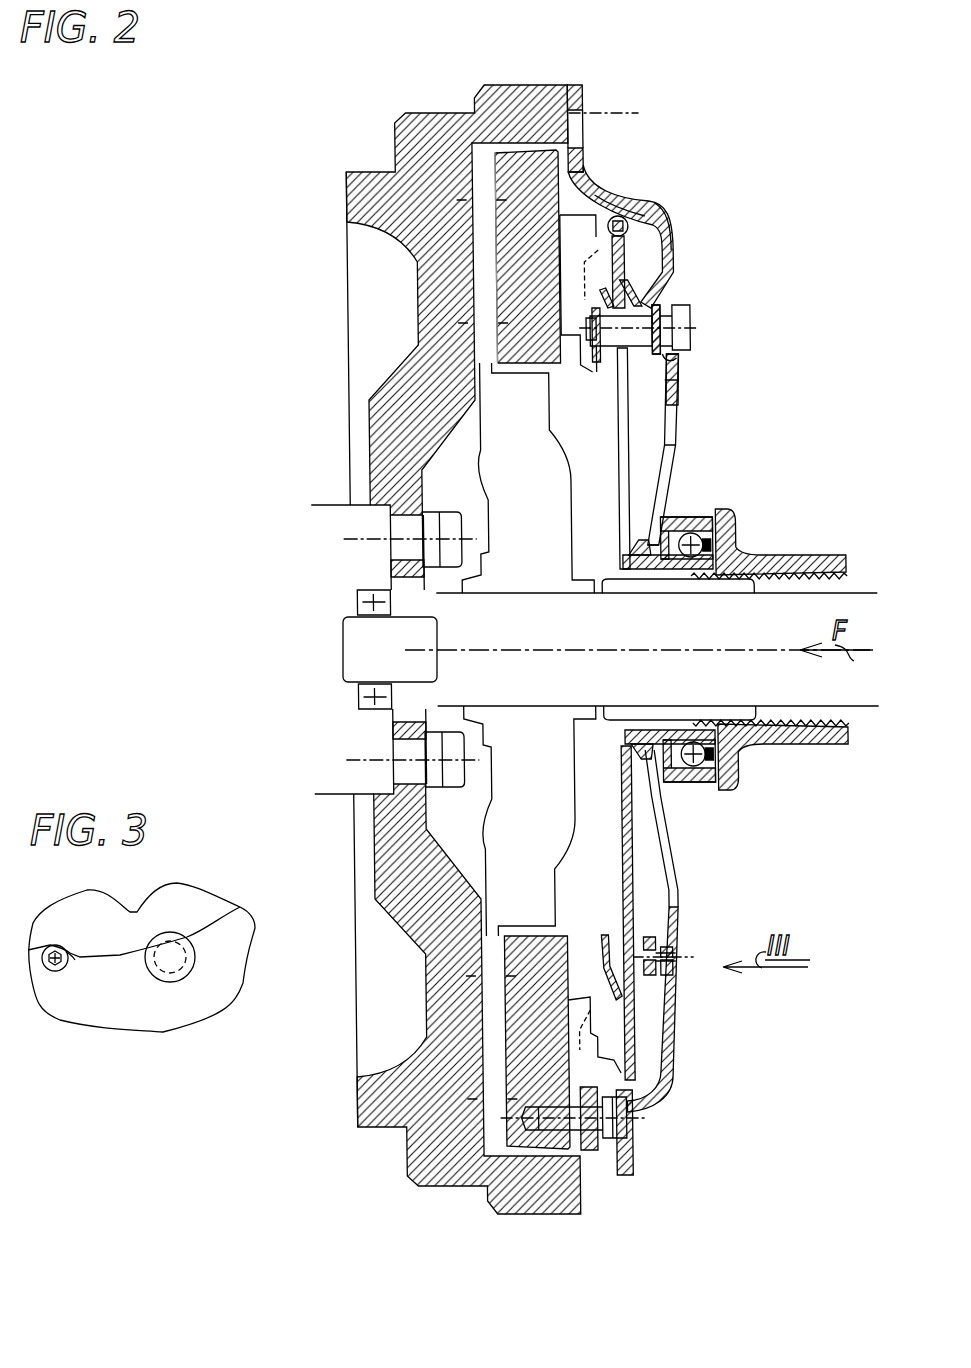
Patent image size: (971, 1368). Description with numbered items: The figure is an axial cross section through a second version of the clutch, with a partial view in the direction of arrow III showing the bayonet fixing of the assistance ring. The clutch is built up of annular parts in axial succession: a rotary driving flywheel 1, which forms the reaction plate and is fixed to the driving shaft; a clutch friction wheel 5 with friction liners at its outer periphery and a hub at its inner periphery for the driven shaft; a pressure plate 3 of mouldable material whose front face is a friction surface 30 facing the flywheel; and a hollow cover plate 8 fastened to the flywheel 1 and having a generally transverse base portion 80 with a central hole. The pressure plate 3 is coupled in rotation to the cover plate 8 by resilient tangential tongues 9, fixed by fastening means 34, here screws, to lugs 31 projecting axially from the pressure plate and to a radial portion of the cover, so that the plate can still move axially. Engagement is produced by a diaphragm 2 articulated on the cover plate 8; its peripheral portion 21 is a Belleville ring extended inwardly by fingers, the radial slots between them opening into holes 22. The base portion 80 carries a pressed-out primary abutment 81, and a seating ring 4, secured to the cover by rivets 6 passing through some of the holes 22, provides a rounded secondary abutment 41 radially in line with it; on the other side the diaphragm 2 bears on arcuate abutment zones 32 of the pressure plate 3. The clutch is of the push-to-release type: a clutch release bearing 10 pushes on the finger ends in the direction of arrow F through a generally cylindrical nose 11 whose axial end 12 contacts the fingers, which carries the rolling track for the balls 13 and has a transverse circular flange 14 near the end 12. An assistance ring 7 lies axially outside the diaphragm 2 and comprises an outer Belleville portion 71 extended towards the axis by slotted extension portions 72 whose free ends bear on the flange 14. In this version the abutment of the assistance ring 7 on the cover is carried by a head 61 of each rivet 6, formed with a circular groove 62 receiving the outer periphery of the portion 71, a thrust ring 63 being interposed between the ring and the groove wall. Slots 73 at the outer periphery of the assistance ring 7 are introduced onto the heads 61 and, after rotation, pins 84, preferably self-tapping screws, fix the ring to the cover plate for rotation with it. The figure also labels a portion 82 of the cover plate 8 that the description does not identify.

In FIG. 2, the rotary driving flywheel 1 is at (398, 125).
In FIG. 2, the diaphragm 2 is at (613, 455).
In FIG. 2, the pressure plate 3 is at (560, 177).
In FIG. 2, the seating ring 4 is at (594, 357).
In FIG. 2, the clutch friction wheel 5 is at (470, 411).
In FIG. 2, the rivets 6 is at (695, 327).
In FIG. 3, the rivets 6 is at (188, 983).
In FIG. 2, the assistance ring 7 is at (680, 437).
In FIG. 3, the assistance ring 7 is at (222, 927).
In FIG. 2, the cover plate 8 is at (649, 195).
In FIG. 3, the cover plate 8 is at (145, 1023).
In FIG. 2, the resilient tongues 9 is at (590, 1150).
In FIG. 2, the clutch release bearing 10 is at (782, 531).
In FIG. 2, the nose 11 is at (665, 572).
In FIG. 2, the axial end 12 is at (635, 550).
In FIG. 2, the balls 13 is at (700, 515).
In FIG. 2, the transverse circular flange 14 is at (640, 540).
In FIG. 2, the peripheral portion 21 is at (630, 262).
In FIG. 2, the holes 22 is at (610, 362).
In FIG. 2, the friction surface 30 is at (487, 242).
In FIG. 2, the lugs 31 is at (586, 1160).
In FIG. 2, the abutment zones 32 is at (612, 230).
In FIG. 2, the fastening means 34 is at (627, 1131).
In FIG. 2, the secondary abutment 41 is at (622, 293).
In FIG. 2, the head 61 is at (692, 320).
In FIG. 2, the circular groove 62 is at (662, 302).
In FIG. 2, the thrust ring 63 is at (680, 358).
In FIG. 2, the outer Belleville ring portion 71 is at (682, 386).
In FIG. 2, the extension portions 72 is at (655, 492).
In FIG. 2, the slots 73 is at (678, 948).
In FIG. 3, the slots 73 is at (76, 962).
In FIG. 2, the base portion 80 is at (688, 214).
In FIG. 2, the primary abutment 81 is at (645, 300).
In FIG. 2, the cover curved portion 82 is at (620, 192).
In FIG. 2, the pins 84 is at (680, 970).
In FIG. 3, the pins 84 is at (56, 972).